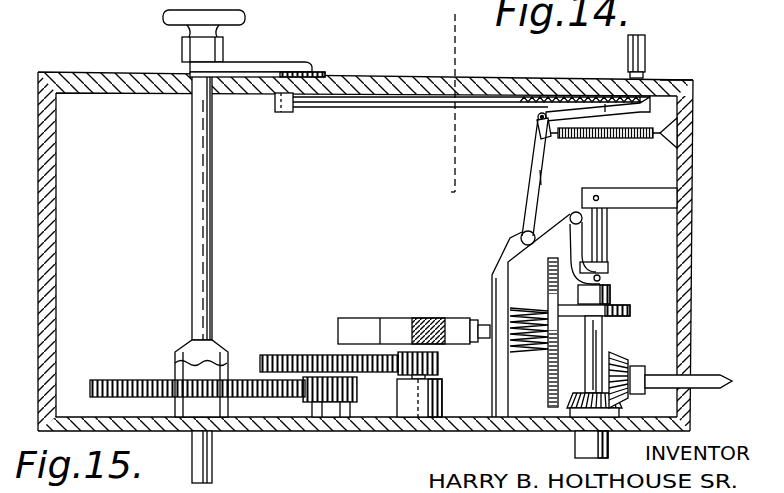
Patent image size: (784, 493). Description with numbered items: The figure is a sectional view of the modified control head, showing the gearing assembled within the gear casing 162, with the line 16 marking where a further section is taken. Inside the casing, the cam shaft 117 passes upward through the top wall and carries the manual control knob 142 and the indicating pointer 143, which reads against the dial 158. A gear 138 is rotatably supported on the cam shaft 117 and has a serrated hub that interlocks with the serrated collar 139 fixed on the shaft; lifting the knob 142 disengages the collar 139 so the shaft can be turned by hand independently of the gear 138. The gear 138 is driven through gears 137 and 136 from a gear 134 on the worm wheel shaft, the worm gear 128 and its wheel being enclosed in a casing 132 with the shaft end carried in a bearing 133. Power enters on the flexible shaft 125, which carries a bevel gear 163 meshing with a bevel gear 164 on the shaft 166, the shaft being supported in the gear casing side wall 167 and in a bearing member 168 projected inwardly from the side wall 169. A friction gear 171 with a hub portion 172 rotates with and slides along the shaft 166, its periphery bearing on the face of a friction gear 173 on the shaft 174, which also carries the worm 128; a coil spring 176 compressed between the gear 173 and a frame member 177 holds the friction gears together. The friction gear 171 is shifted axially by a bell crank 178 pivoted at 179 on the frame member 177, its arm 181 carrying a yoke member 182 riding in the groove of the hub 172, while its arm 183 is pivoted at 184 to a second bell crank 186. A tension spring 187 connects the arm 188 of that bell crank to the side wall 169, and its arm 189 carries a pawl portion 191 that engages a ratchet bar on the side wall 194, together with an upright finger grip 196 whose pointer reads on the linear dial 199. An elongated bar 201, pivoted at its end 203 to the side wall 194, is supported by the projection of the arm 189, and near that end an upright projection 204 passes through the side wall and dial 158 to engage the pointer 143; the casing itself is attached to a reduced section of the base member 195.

The section line 16— 16 is at (451, 14).
The cam shaft 117 is at (209, 240).
The flexible shaft 125 is at (703, 378).
The worm gear 128 is at (434, 322).
The casing 132 is at (371, 322).
The bearing 133 is at (443, 388).
The gear 134 is at (440, 364).
The gear 136 is at (284, 356).
The gear 137 is at (355, 387).
The gear 138 is at (113, 380).
The serrated collar 139 is at (211, 344).
The manual control knob 142 is at (236, 17).
The indicating pointer 143 is at (285, 63).
The dial 158 is at (93, 74).
The gear casing 162 is at (327, 435).
The bevel gear 163 is at (628, 361).
The bevel gear 164 is at (622, 414).
The shaft 166 is at (594, 342).
The gear casing side wall 167 is at (472, 433).
The bearing member 168 is at (621, 193).
The gear casing side wall 169 is at (689, 250).
The friction gear 171 is at (623, 307).
The hub portion 172 is at (609, 267).
The friction gear 173 is at (548, 376).
The shaft 174 is at (515, 312).
The coil spring 176 is at (529, 342).
The frame member 177 is at (492, 275).
The bell crank 178 is at (543, 177).
The pivot 179 is at (522, 231).
The bell crank arm 181 is at (541, 222).
The yoke member 182 is at (574, 250).
The arm 183 is at (537, 159).
The pivot 184 is at (537, 117).
The second bell crank 186 is at (581, 110).
The tension spring 187 is at (634, 139).
The arm 188 is at (538, 128).
The arm 189 is at (606, 104).
The pawl portion 191 is at (649, 97).
The gear housing side wall 194 is at (461, 92).
The base member 195 is at (542, 96).
The finger grip 196 is at (644, 36).
The linear dial 199 is at (678, 80).
The elongated bar 201 is at (398, 104).
The end 203 is at (275, 103).
The upright projection 204 is at (314, 72).